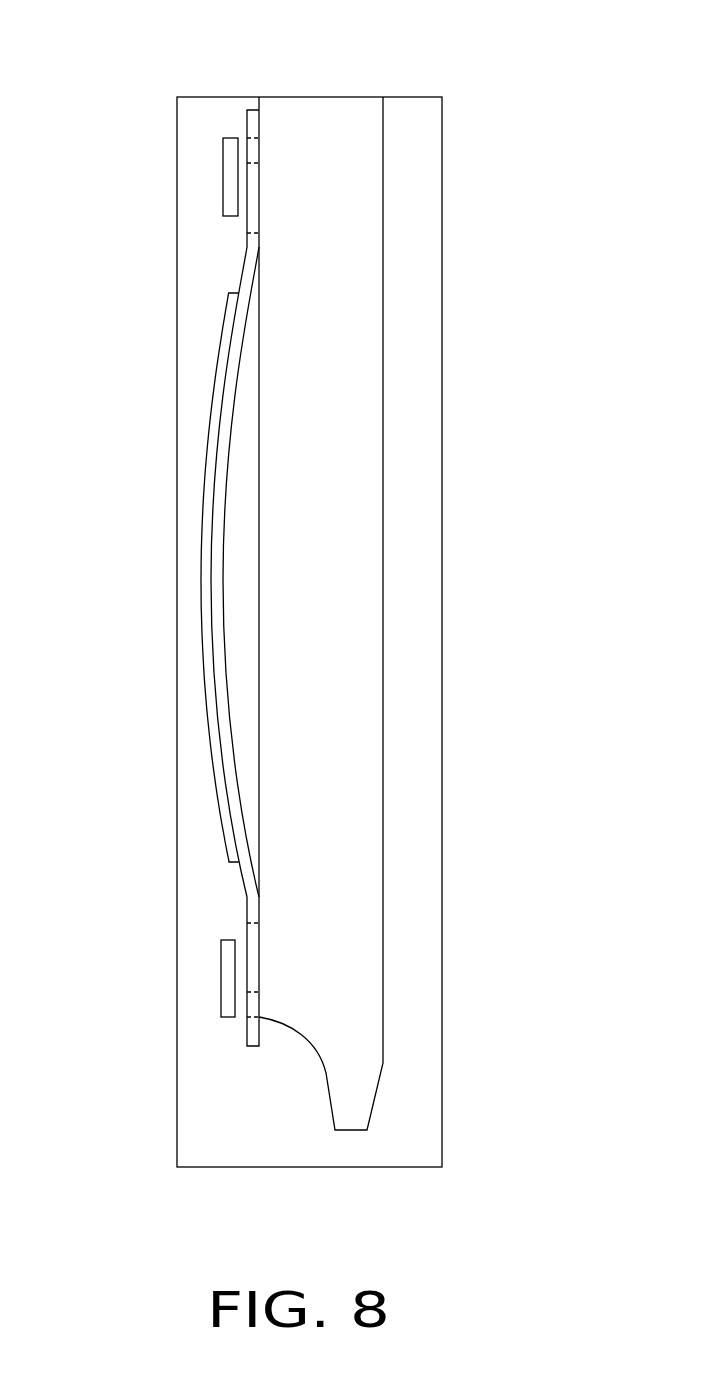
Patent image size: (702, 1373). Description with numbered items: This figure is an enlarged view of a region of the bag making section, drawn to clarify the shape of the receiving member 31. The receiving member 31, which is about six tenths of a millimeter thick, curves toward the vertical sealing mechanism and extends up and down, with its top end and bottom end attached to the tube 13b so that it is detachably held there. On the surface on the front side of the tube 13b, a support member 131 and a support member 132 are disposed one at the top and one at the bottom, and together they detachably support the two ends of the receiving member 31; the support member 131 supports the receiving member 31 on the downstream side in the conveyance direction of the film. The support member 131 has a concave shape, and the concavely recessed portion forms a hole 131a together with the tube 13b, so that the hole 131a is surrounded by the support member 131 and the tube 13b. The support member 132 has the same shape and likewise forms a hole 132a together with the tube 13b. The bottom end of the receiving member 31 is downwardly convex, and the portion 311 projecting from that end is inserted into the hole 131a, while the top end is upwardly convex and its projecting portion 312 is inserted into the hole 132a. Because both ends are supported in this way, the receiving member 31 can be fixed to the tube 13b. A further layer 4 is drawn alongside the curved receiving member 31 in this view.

The adhesive layer 4 is at (207, 668).
The receiving member 31 is at (217, 525).
The portion that projects convexly from the bottom end 311 is at (248, 960).
The portion that projects convexly from the top end 312 is at (255, 190).
The support member 131 is at (223, 1010).
The hole 131a is at (240, 938).
The support member 132 is at (230, 147).
The hole 132a is at (242, 218).
The tube 13b is at (345, 493).